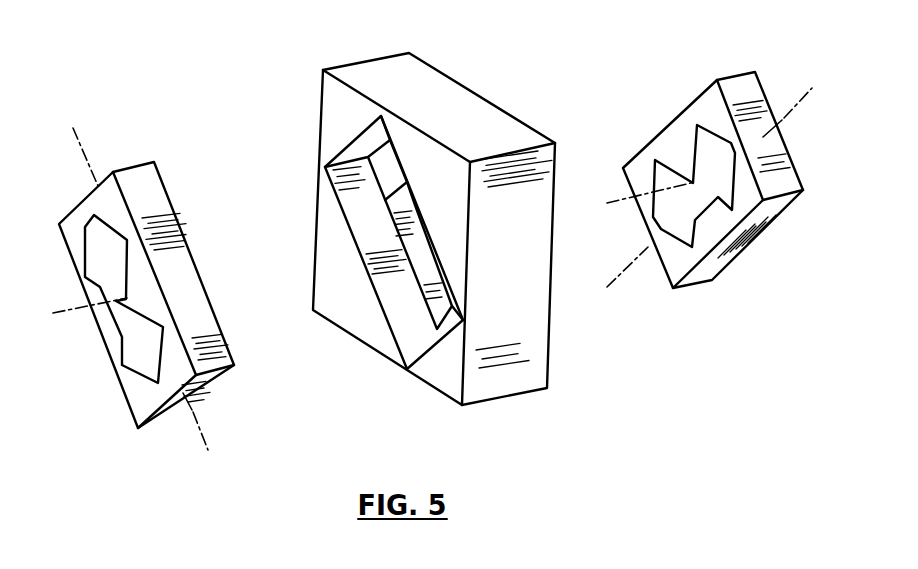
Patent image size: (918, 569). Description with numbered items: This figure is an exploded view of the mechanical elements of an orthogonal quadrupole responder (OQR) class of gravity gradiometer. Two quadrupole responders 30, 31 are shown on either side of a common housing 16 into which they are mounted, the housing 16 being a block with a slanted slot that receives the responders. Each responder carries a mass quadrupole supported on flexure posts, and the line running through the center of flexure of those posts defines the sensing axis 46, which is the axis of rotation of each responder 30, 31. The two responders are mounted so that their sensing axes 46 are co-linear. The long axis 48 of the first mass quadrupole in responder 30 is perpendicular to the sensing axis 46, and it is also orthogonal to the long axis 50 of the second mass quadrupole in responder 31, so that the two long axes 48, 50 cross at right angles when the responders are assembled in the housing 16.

The common housing 16 is at (457, 103).
The quadrupole responder 30 is at (222, 333).
The quadrupole responder 31 is at (672, 267).
The sensing axis 46 is at (66, 313).
The long axis of the mass quadrupole 48 is at (80, 143).
The long axis of the second mass quadrupole 50 is at (788, 109).